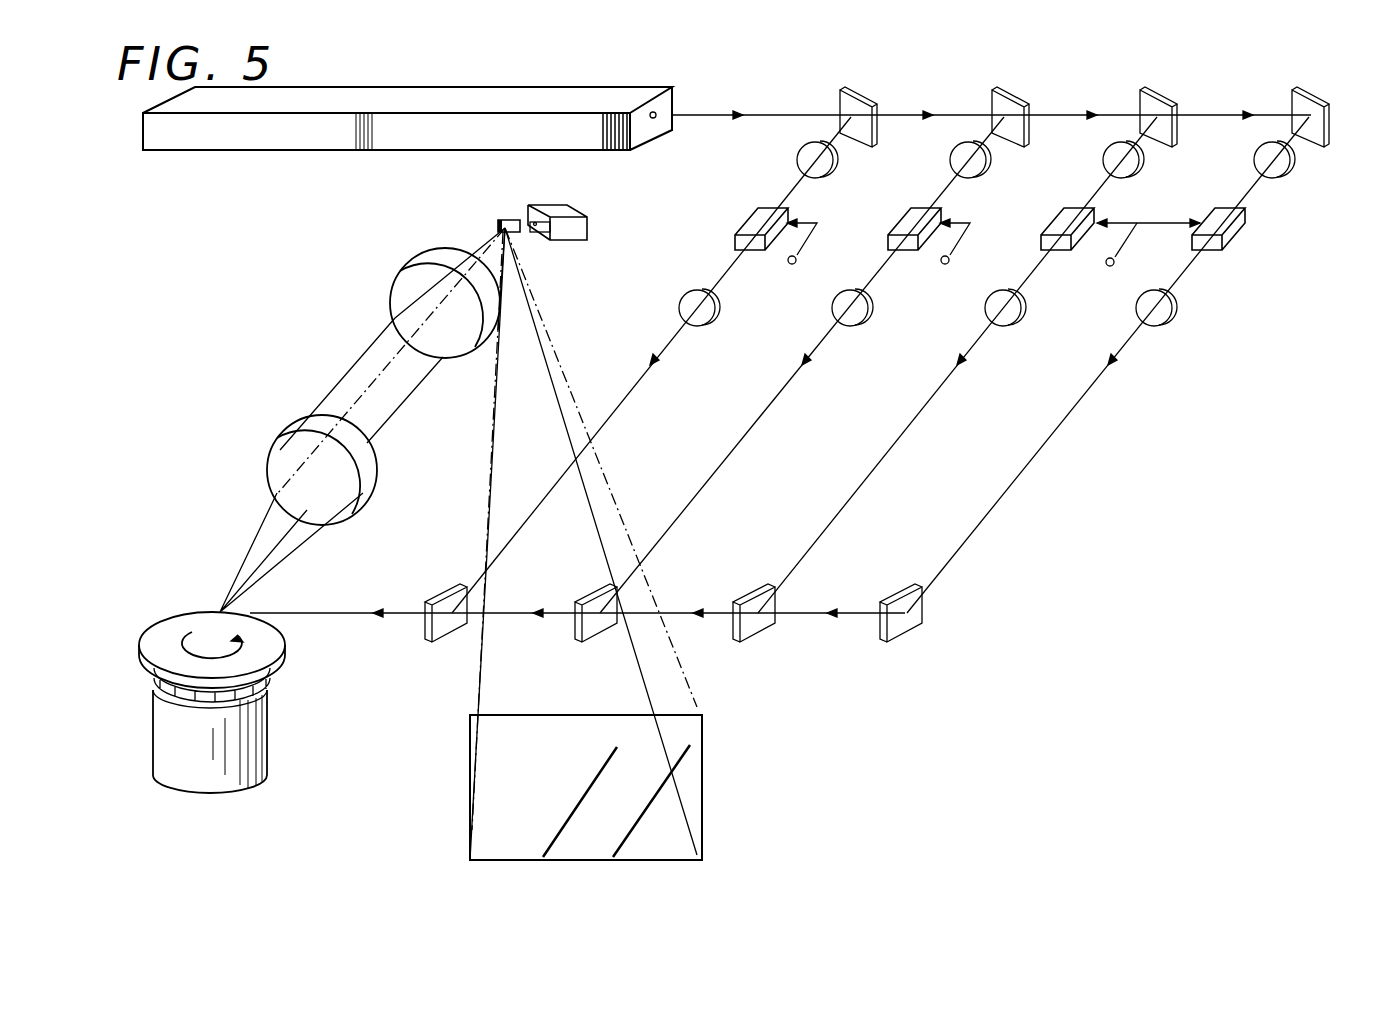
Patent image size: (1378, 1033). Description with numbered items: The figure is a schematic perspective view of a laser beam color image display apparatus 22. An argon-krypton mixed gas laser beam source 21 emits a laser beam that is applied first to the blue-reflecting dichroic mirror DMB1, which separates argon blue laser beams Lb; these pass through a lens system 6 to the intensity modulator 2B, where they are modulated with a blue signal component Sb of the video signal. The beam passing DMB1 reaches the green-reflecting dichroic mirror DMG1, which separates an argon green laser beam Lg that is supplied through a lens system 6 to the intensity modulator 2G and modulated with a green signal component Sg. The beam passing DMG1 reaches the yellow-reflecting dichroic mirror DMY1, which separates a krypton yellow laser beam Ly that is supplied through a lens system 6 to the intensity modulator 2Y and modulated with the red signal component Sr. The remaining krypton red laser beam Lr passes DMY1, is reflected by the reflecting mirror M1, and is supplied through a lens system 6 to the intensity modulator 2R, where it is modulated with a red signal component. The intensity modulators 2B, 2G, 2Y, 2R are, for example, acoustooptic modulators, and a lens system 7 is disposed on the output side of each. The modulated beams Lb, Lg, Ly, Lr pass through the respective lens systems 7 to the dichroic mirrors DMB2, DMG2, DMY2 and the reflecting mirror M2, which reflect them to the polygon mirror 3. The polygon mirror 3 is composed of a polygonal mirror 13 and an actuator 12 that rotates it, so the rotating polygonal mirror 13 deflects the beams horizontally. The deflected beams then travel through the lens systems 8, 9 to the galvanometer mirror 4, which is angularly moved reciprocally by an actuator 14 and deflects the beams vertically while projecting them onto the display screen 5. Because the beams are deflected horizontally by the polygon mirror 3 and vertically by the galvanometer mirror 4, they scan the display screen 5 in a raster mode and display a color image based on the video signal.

The argon-krypton mixed gas laser beam source 21 is at (527, 97).
The laser beam color image display apparatus 22 is at (212, 285).
The galvanometer mirror 4 is at (504, 218).
The actuator 14 is at (572, 207).
The lens system 8 is at (400, 270).
The lens system 9 is at (278, 438).
The display screen 5 is at (702, 775).
The polygon mirror 3 is at (258, 702).
The actuator 12 is at (251, 741).
The polygonal mirror 13 is at (281, 667).
The lens system 6 is at (835, 167).
The lens system 7 is at (710, 322).
The intensity modulator 2B is at (742, 225).
The intensity modulator 2G is at (896, 225).
The intensity modulator 2Y is at (1048, 225).
The intensity modulator 2R is at (1245, 225).
The blue-reflecting dichroic mirror DMB1 is at (869, 108).
The green-reflecting dichroic mirror DMG1 is at (1021, 106).
The yellow-reflecting dichroic mirror DMY1 is at (1172, 110).
The reflecting mirror M1 is at (1290, 107).
The blue-reflecting dichroic mirror DMB2 is at (456, 594).
The green-reflecting dichroic mirror DMG2 is at (593, 598).
The yellow-reflecting dichroic mirror DMY2 is at (742, 598).
The reflecting mirror M2 is at (922, 622).
The blue laser beams Lb is at (793, 186).
The green laser beam Lg is at (945, 186).
The yellow laser beam Ly is at (1099, 186).
The red laser beam Lr is at (1250, 186).
The blue signal component Sb is at (787, 277).
The green signal component Sg is at (940, 277).
The red signal component Sr is at (1101, 278).